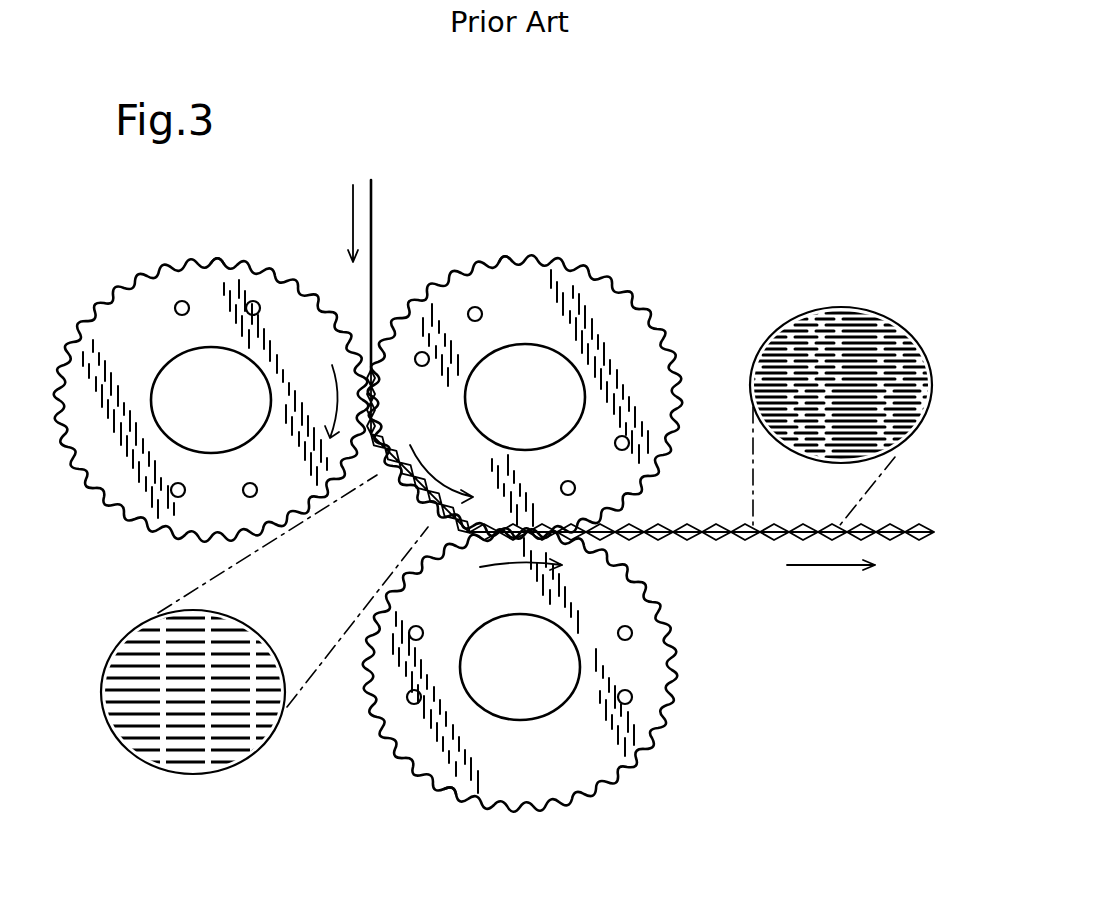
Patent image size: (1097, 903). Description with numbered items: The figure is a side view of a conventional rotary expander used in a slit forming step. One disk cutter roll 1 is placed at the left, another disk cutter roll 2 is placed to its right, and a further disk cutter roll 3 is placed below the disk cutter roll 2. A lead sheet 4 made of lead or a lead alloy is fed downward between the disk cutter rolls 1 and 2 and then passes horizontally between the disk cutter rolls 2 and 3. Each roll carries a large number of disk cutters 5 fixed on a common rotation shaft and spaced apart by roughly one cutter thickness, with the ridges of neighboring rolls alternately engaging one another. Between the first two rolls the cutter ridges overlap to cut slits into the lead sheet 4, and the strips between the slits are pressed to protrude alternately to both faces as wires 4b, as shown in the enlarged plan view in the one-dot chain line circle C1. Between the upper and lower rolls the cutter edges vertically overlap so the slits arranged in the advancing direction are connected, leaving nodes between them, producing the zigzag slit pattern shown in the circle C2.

The disk cutter roll 1 is at (137, 249).
The disk cutter roll 2 is at (614, 257).
The disk cutter roll 3 is at (663, 766).
The lead sheet 4 is at (372, 260).
The disk cutter 5 is at (227, 258).
The wire 4b is at (683, 527).
The circle of one-dot chain line C1 is at (255, 641).
The circle of one-dot chain line C2 is at (831, 396).